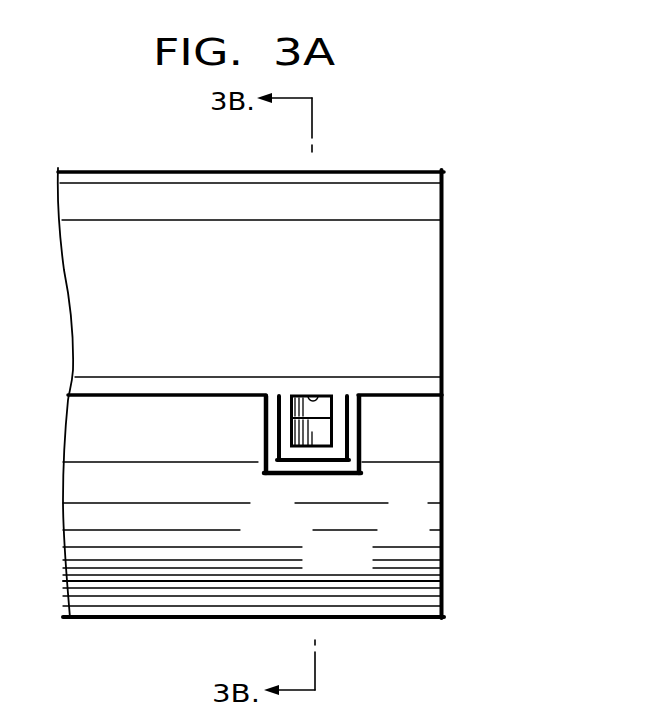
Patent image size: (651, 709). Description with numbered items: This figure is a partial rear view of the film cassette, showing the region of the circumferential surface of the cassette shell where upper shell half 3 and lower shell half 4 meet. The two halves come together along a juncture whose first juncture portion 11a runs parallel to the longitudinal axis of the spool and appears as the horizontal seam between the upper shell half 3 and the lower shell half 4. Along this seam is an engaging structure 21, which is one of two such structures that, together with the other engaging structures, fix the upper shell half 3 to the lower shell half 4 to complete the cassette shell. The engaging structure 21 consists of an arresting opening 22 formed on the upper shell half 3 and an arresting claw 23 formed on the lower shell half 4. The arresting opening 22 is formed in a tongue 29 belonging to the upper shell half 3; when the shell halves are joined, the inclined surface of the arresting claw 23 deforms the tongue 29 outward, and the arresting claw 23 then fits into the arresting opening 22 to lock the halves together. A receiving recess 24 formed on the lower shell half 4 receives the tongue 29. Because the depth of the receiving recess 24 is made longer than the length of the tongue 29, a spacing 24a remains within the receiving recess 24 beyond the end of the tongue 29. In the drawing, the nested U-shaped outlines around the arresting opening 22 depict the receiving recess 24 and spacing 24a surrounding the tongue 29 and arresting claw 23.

The upper shell half 3 is at (112, 196).
The lower shell half 4 is at (113, 598).
The first juncture portion 11a is at (138, 396).
The engaging structure 21 is at (341, 438).
The arresting opening 22 is at (305, 396).
The arresting claw 23 is at (302, 446).
The receiving recess 24 is at (265, 448).
The spacing 24a is at (360, 427).
The tongue 29 is at (325, 457).